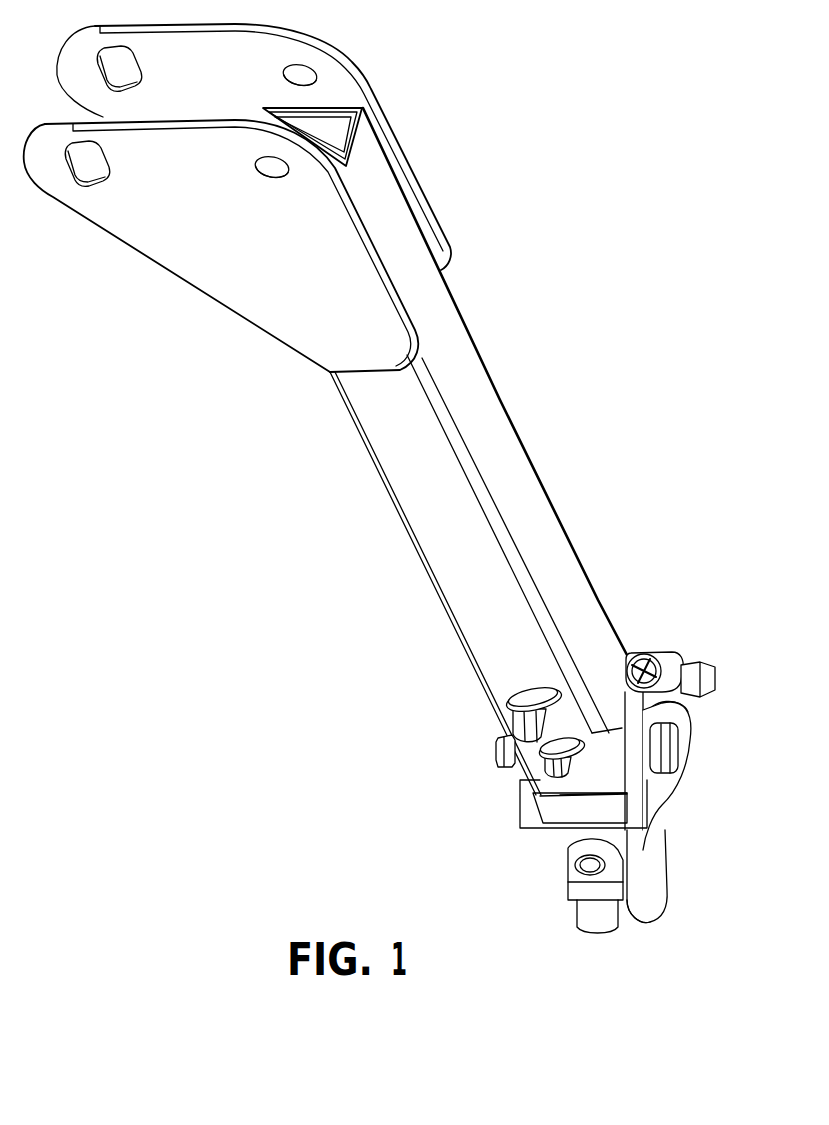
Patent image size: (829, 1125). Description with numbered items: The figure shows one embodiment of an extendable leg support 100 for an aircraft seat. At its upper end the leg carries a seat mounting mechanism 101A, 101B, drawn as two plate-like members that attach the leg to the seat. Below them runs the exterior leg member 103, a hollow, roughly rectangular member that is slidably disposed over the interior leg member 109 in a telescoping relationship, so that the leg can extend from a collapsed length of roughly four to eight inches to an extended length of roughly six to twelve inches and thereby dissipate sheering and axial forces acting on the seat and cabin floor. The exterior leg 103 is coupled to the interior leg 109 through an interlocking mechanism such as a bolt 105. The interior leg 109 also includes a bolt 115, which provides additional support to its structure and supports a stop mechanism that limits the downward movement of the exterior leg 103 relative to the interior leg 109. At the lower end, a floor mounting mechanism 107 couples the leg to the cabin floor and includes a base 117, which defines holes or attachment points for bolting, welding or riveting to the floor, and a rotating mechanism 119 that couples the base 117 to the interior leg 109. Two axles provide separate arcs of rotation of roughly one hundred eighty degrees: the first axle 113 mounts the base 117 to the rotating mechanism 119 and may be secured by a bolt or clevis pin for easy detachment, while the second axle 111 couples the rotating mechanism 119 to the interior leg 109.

The extendable leg support 100 is at (158, 534).
The seat mounting mechanism 101A is at (340, 84).
The seat mounting mechanism 101B is at (197, 257).
The exterior leg member 103 is at (465, 387).
The bolt 105 is at (507, 720).
The floor mounting mechanism 107 is at (652, 787).
The interior leg member 109 is at (620, 704).
The second axle 111 is at (670, 750).
The first axle 113 is at (565, 864).
The bolt 115 is at (533, 773).
The base 117 is at (640, 921).
The rotating mechanism 119 is at (590, 813).